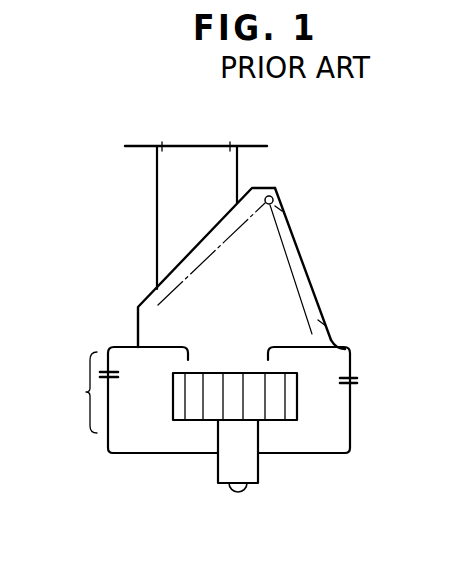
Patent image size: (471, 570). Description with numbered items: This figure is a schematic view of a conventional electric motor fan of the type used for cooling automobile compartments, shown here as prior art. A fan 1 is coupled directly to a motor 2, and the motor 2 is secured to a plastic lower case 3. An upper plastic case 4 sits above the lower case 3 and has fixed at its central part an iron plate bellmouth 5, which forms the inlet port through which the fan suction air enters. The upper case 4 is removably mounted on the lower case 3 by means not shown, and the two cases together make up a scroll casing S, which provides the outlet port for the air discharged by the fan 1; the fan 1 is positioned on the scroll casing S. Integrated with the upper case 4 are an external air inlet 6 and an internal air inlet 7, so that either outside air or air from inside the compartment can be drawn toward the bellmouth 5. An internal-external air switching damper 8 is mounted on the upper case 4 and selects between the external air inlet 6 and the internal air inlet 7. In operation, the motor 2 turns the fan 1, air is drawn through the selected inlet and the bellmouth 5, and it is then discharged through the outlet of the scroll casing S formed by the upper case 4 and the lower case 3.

The fan 1 is at (288, 405).
The motor 2 is at (248, 463).
The lower case 3 is at (336, 453).
The upper case 4 is at (150, 323).
The bellmouth 5 is at (313, 348).
The external air inlet 6 is at (188, 146).
The internal air inlet 7 is at (293, 235).
The internal-external air switching damper 8 is at (301, 276).
The scroll casing S is at (78, 392).